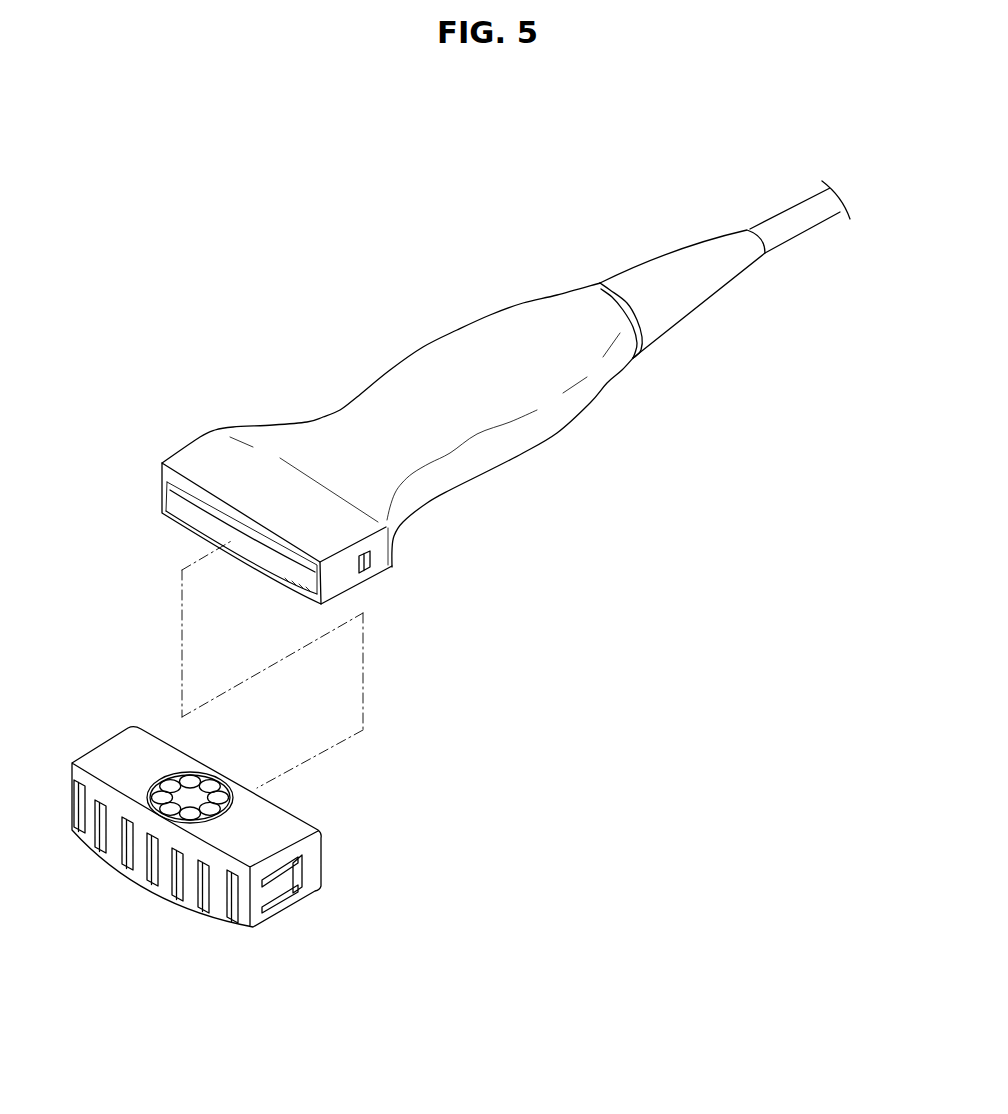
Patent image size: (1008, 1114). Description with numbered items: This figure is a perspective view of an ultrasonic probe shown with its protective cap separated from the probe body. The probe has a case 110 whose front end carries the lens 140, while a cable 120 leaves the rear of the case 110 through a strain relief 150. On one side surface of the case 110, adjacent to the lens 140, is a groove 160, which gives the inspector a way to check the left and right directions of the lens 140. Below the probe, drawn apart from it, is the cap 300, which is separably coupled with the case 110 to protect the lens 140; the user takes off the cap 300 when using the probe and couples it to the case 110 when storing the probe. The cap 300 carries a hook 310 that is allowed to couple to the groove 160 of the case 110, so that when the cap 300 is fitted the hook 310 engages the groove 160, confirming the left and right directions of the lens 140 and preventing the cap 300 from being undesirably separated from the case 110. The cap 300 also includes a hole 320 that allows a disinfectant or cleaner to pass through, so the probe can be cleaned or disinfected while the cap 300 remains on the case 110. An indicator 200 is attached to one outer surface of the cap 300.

The case 110 is at (448, 363).
The cable 120 is at (797, 217).
The lens 140 is at (183, 513).
The strain relief 150 is at (688, 266).
The groove 160 is at (370, 562).
The indicator 200 is at (190, 797).
The cap 300 is at (115, 750).
The hook 310 is at (283, 880).
The hole 320 is at (198, 885).